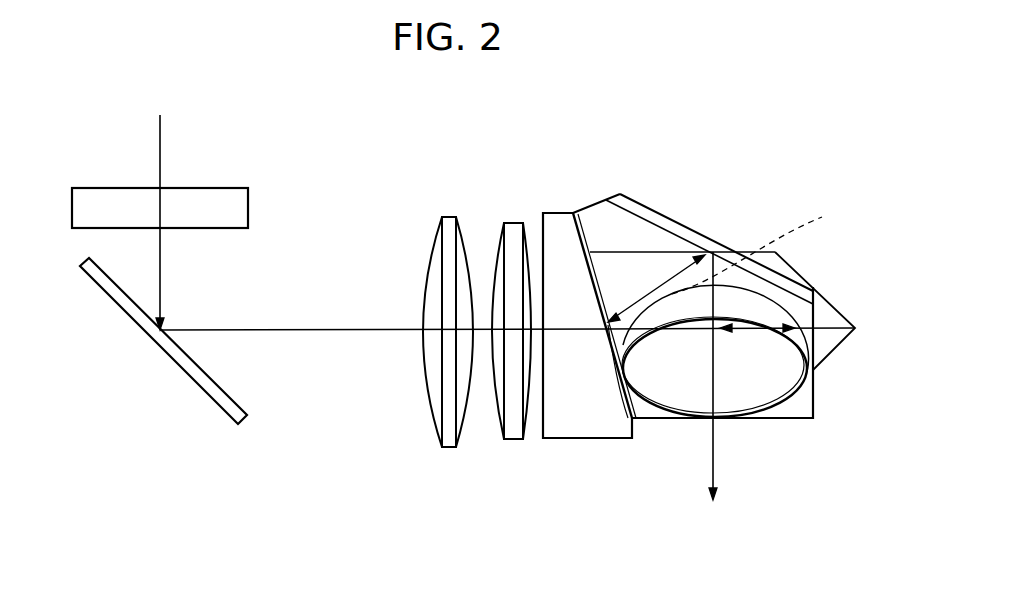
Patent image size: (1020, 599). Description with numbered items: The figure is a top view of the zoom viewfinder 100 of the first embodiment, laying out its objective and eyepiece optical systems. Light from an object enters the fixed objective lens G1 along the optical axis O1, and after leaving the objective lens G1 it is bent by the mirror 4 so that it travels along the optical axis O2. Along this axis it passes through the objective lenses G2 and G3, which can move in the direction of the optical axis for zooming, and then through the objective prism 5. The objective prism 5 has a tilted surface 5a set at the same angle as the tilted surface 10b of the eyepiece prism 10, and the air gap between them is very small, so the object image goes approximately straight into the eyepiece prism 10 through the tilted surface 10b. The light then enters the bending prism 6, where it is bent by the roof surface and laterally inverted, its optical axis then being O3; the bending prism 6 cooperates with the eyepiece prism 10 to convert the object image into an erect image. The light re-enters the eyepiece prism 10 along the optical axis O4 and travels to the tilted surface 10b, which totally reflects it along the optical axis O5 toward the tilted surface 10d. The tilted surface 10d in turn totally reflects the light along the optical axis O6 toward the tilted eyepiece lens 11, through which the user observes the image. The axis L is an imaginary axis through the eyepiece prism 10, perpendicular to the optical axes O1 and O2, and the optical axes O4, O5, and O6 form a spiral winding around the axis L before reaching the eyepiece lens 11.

The viewfinder 100 is at (339, 108).
The optical axis O1 is at (158, 148).
The fixed objective lens G1 is at (248, 208).
The mirror 4 is at (102, 293).
The optical axis O2 is at (290, 331).
The objective lens G2 is at (430, 383).
The objective lens G3 is at (515, 430).
The objective prism 5 is at (575, 412).
The tilted surface 5a is at (572, 215).
The tilted surface 10b is at (594, 292).
The eyepiece prism 10 is at (815, 406).
The tilted surface 10d is at (660, 223).
The bending prism 6 is at (836, 318).
The optical axis O5 is at (657, 284).
The optical axis O3 is at (728, 327).
The axis L is at (756, 251).
The eyepiece lens 11 is at (778, 367).
The optical axis O4 is at (633, 428).
The optical axis O6 is at (718, 449).